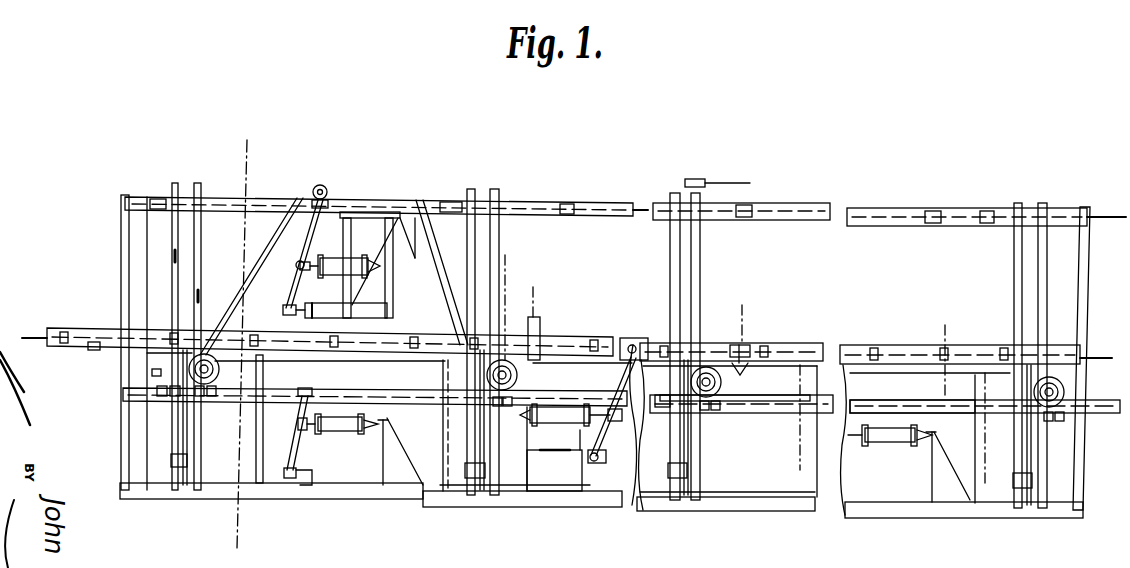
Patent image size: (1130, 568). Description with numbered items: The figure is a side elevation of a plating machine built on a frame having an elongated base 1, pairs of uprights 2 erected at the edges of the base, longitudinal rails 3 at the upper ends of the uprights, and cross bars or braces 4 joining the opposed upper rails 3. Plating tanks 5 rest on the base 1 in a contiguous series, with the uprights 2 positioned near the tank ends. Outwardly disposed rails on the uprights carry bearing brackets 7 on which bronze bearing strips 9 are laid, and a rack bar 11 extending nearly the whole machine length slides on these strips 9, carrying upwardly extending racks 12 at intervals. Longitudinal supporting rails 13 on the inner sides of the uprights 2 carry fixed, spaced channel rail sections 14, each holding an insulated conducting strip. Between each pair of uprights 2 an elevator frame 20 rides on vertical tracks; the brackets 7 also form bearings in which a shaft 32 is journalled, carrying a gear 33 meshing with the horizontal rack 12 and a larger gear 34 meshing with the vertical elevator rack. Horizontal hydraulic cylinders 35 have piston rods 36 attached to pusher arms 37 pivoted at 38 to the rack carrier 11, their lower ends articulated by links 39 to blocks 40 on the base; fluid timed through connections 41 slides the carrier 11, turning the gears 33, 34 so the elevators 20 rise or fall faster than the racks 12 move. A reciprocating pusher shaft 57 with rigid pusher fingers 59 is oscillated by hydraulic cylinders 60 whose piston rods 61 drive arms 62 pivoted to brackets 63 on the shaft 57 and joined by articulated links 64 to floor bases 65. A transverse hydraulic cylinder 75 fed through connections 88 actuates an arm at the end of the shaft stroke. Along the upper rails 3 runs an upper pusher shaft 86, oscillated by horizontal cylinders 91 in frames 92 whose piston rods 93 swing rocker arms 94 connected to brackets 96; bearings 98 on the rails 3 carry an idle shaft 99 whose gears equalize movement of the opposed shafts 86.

The elongated base 1 is at (192, 489).
The uprights 2 is at (121, 243).
The longitudinal rails 3 is at (505, 262).
The cross bars or braces 4 is at (176, 183).
The plating tanks 5 is at (452, 473).
The bearing brackets 7 is at (133, 393).
The bearing strips 9 is at (742, 305).
The rack bar 11 is at (945, 325).
The racks 12 is at (1113, 406).
The longitudinal supporting rails 13 is at (95, 350).
The fixed rail sections 14 is at (147, 328).
The elevator frame 20 is at (171, 462).
The shaft 32 is at (208, 388).
The gear 33 is at (220, 371).
The larger gear 34 is at (152, 372).
The horizontal hydraulic cylinders 35 is at (340, 431).
The piston rods 36 is at (318, 428).
The pusher arms 37 is at (293, 441).
The pivot 38 is at (305, 389).
The links 39 is at (286, 479).
The blocks 40 is at (302, 487).
The connections 41 is at (938, 441).
The pusher shaft 57 is at (40, 337).
The pusher fingers 59 is at (797, 344).
The hydraulic cylinders 60 is at (565, 425).
The piston rods 61 is at (601, 470).
The arms 62 is at (598, 460).
The brackets 63 is at (637, 337).
The articulated links 64 is at (582, 465).
The bases 65 is at (553, 452).
The hydraulic cylinder 75 is at (737, 346).
The upper pusher shaft 86 is at (1106, 226).
The connections 88 is at (734, 392).
The horizontal cylinders 91 is at (340, 262).
The frames 92 is at (390, 299).
The piston rods 93 is at (296, 267).
The rocker arms 94 is at (299, 252).
The brackets 96 is at (405, 212).
The bearings 98 is at (318, 185).
The idle shaft 99 is at (330, 190).